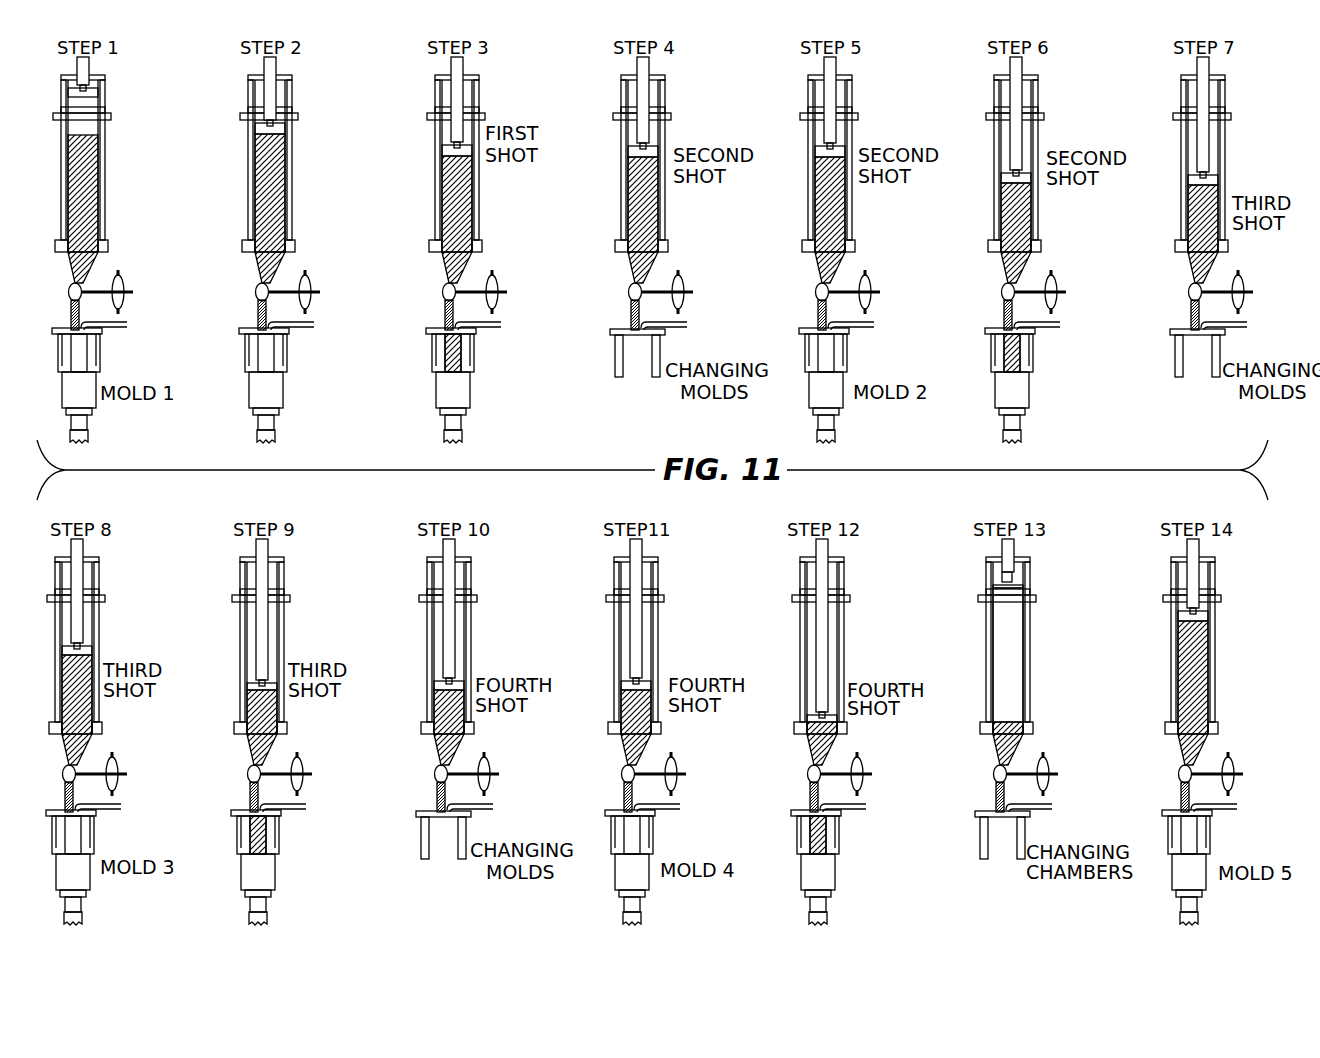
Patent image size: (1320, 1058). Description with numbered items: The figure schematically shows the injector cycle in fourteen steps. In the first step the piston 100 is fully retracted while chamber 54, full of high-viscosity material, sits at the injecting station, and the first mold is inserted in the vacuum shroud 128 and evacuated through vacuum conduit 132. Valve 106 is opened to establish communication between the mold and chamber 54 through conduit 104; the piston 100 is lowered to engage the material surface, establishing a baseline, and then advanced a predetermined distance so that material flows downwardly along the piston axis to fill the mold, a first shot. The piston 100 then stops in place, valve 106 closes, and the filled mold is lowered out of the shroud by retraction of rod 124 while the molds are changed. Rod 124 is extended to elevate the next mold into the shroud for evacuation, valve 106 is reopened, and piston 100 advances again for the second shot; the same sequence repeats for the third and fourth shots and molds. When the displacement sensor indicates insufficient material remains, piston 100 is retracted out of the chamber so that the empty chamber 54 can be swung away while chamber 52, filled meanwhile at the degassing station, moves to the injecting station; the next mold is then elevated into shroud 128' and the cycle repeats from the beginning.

The piston 100 is at (92, 98).
The chamber 54 is at (90, 177).
The valve 106 is at (118, 273).
The conduit 104 is at (76, 312).
The vacuum conduit 132 is at (115, 325).
The vacuum shroud 128 is at (121, 379).
The rod 124 is at (88, 430).
The chamber 52 is at (1200, 663).
The vacuum shroud 128' is at (1233, 861).